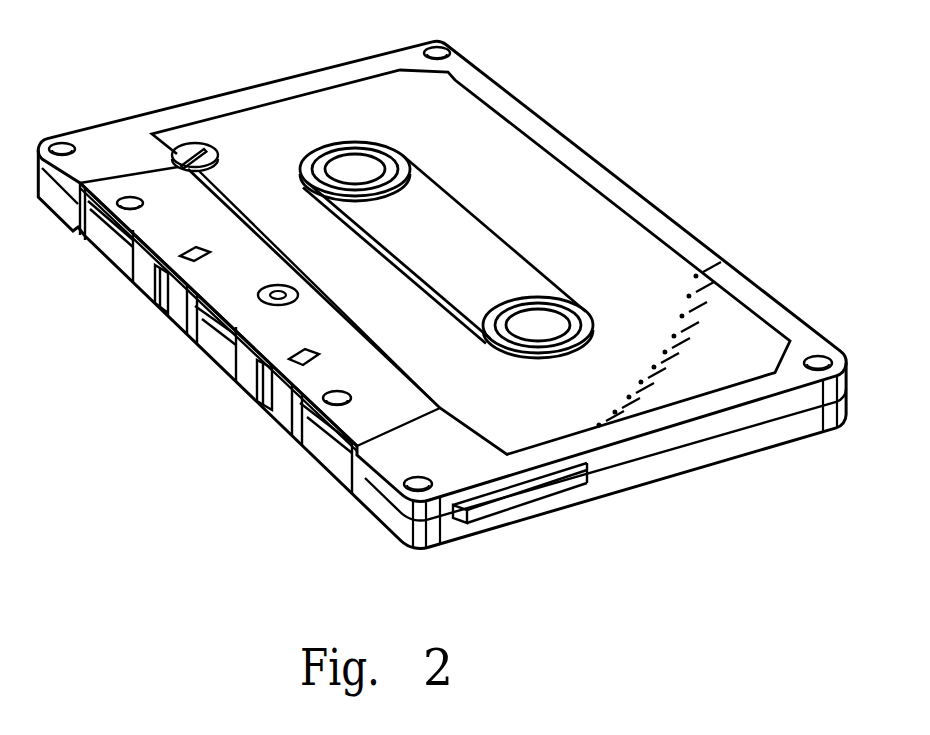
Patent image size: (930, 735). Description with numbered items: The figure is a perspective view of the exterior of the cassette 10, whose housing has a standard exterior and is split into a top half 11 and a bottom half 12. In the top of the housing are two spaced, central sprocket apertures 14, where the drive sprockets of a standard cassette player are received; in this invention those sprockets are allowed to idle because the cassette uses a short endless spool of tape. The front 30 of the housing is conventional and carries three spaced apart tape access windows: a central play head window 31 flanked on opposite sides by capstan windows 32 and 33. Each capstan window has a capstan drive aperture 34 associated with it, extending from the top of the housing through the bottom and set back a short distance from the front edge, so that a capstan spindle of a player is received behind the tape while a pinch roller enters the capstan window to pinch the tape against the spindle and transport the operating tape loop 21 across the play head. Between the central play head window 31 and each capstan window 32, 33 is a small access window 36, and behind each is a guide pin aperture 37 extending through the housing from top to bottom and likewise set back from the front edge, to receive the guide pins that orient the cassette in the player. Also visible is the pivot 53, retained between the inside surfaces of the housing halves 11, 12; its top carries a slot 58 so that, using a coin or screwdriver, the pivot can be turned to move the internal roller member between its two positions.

The cassette 10 is at (657, 104).
The top half 11 is at (697, 250).
The bottom half 12 is at (737, 438).
The sprocket apertures 14 is at (403, 180).
The operating tape loop 21 is at (336, 445).
The front 30 is at (163, 322).
The central play head window 31 is at (195, 318).
The capstan window 32 is at (107, 253).
The capstan window 33 is at (316, 449).
The capstan drive aperture 34 is at (138, 208).
The small access window 36 is at (158, 295).
The guide pin aperture 37 is at (208, 254).
The pivot 53 is at (219, 168).
The slot 58 is at (206, 148).